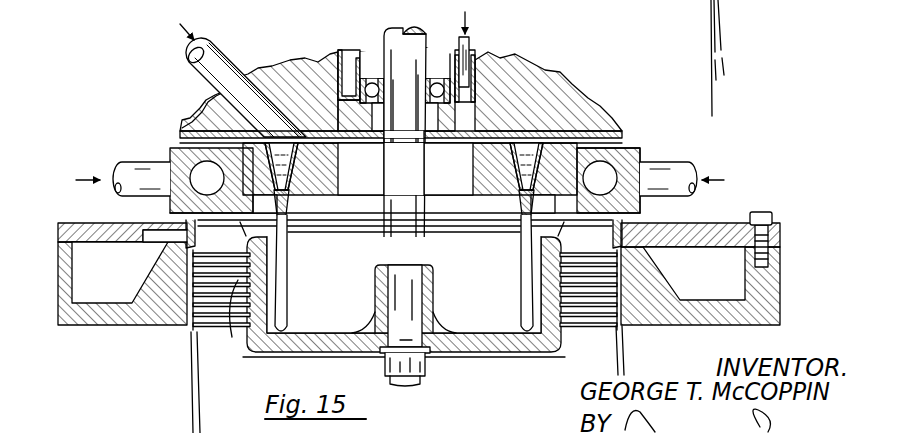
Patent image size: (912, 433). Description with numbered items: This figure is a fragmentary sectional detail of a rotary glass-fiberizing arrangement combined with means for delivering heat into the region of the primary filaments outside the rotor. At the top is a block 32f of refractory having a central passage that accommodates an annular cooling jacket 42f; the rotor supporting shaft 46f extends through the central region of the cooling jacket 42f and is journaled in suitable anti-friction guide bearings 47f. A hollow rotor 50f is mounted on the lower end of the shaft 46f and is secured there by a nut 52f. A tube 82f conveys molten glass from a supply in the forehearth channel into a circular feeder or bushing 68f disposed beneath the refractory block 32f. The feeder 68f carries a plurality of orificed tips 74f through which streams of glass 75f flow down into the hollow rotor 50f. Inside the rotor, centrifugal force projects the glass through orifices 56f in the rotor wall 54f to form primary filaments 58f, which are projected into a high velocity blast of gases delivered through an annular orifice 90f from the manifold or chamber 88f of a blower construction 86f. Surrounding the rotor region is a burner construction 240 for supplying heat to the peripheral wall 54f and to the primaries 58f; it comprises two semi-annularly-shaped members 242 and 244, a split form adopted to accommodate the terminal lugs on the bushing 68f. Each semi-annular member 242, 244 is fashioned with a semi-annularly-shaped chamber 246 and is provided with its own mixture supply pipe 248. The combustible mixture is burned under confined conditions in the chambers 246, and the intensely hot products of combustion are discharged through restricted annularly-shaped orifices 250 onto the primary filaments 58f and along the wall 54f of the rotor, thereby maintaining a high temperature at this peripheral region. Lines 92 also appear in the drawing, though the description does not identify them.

The block of refractory 32f is at (528, 78).
The circular feeder or bushing 68f is at (216, 100).
The cooling jacket 42f is at (350, 54).
The rotor supporting shaft 46f is at (430, 32).
The anti-friction guide bearings 47f is at (468, 44).
The tube 82f is at (226, 56).
The semi-annularly-shaped member 244 is at (180, 148).
The semi-annularly-shaped member 242 is at (628, 148).
The burner construction 240 is at (648, 149).
The semi-annularly-shaped chamber 246 is at (214, 189).
The mixture supply pipe 248 is at (150, 162).
The orificed tips 74f is at (292, 201).
The streams of glass 75f is at (290, 270).
The annular orifice 90f is at (187, 226).
The restricted annularly-shaped orifices 250 is at (240, 222).
The hollow rotor 50f is at (455, 360).
The nut 52f is at (384, 368).
The rotor wall 54f is at (405, 290).
The orifices 56f is at (252, 278).
The primary filaments 58f is at (232, 337).
The manifold or chamber 88f is at (116, 274).
The blower construction 86f is at (778, 222).
The line 92 is at (190, 388).